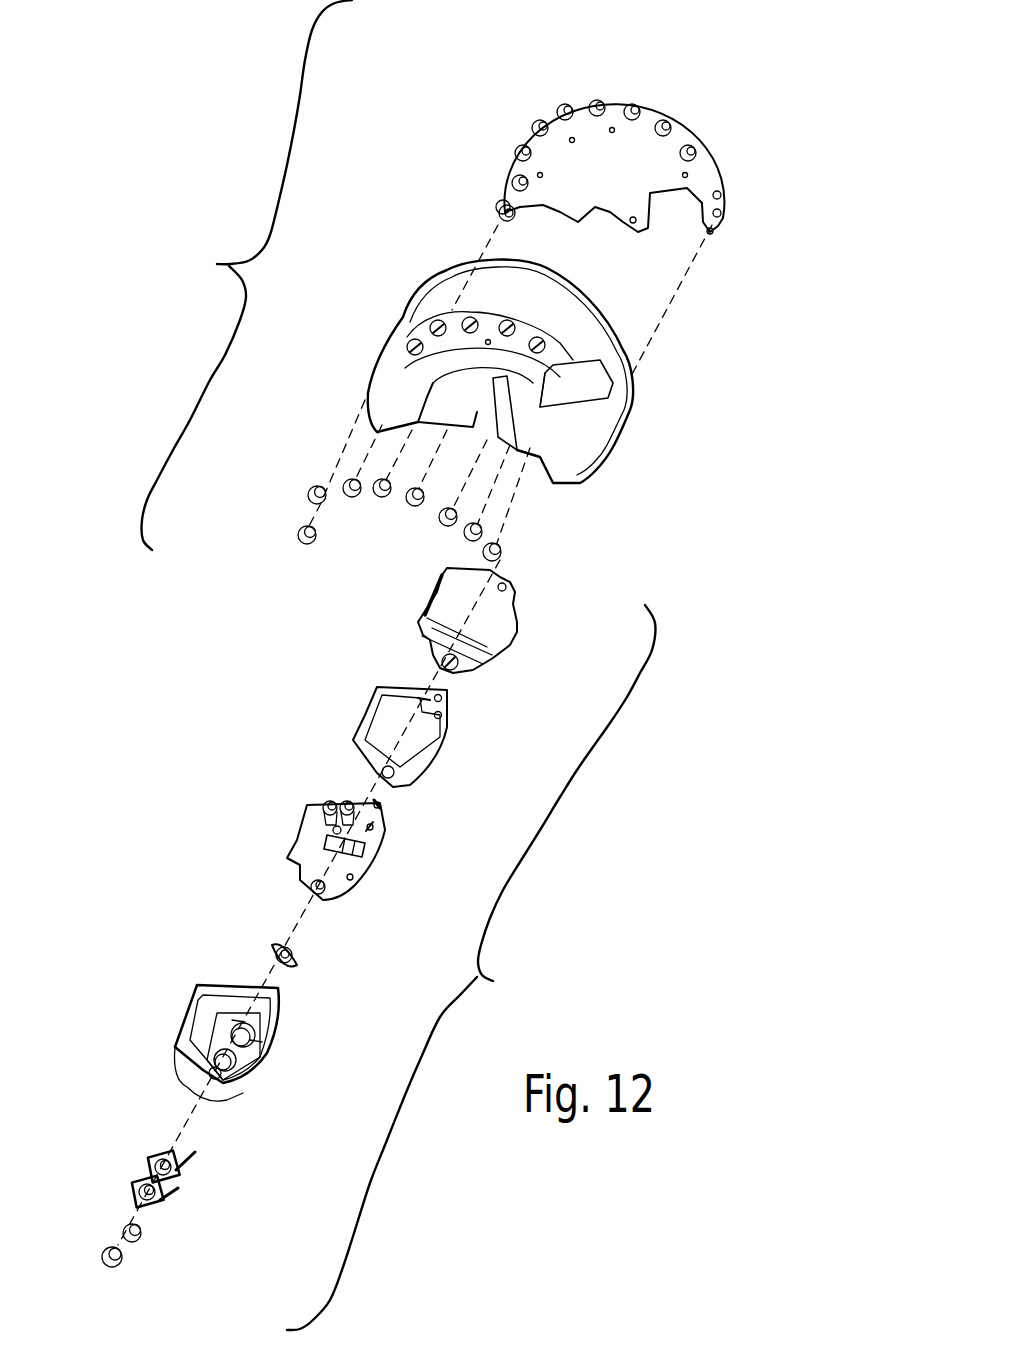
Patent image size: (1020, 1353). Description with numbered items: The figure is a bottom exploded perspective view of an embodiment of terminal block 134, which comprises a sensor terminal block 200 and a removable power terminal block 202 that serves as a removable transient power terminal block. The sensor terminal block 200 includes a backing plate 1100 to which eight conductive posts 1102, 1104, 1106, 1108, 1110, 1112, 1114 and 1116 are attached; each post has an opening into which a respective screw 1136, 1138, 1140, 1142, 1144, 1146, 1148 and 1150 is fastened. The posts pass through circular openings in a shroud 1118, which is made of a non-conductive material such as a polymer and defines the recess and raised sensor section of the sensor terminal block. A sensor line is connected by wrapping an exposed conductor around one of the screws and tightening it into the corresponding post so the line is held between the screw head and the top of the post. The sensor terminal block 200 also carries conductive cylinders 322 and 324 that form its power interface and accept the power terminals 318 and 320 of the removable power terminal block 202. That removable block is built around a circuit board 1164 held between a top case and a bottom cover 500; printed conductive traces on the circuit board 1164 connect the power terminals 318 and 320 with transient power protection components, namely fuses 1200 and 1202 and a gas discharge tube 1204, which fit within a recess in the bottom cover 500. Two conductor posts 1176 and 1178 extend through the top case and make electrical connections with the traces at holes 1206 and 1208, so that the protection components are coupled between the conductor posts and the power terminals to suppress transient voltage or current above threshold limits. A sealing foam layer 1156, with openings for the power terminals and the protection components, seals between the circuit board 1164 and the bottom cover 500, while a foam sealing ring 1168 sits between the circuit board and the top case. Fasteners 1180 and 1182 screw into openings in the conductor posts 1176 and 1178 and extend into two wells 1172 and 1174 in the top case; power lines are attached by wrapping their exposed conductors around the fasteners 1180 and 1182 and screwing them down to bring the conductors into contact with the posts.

The terminal block 134 is at (135, 307).
The sensor terminal block 200 is at (247, 275).
The removable power terminal block 202 is at (471, 967).
The backing plate 1100 is at (708, 177).
The conductive post 1102 is at (694, 150).
The conductive post 1104 is at (668, 122).
The conductive post 1106 is at (640, 104).
The conductive post 1108 is at (600, 101).
The conductive post 1110 is at (558, 108).
The conductive post 1112 is at (537, 119).
The conductive post 1114 is at (517, 152).
The conductive post 1116 is at (512, 182).
The conductive cylinder 322 is at (722, 197).
The conductive cylinder 324 is at (723, 212).
The shroud 1118 is at (605, 452).
The screw 1136 is at (499, 553).
The screw 1138 is at (481, 530).
The screw 1140 is at (458, 512).
The screw 1142 is at (413, 490).
The screw 1144 is at (383, 480).
The screw 1146 is at (352, 480).
The screw 1148 is at (312, 492).
The screw 1150 is at (300, 535).
The bottom cover 500 is at (490, 632).
The sealing foam layer 1156 is at (441, 723).
The circuit board 1164 is at (297, 843).
The fuse 1200 is at (347, 802).
The fuse 1202 is at (331, 802).
The gas discharge tube 1204 is at (333, 829).
The power terminal 318 is at (382, 805).
The power terminal 320 is at (375, 826).
The hole 1206 is at (372, 846).
The hole 1208 is at (350, 880).
The foam sealing ring 1168 is at (297, 965).
The well 1172 is at (250, 1037).
The well 1174 is at (232, 1060).
The conductor post 1176 is at (195, 1163).
The conductor post 1178 is at (178, 1192).
The fastener 1180 is at (140, 1229).
The fastener 1182 is at (121, 1259).